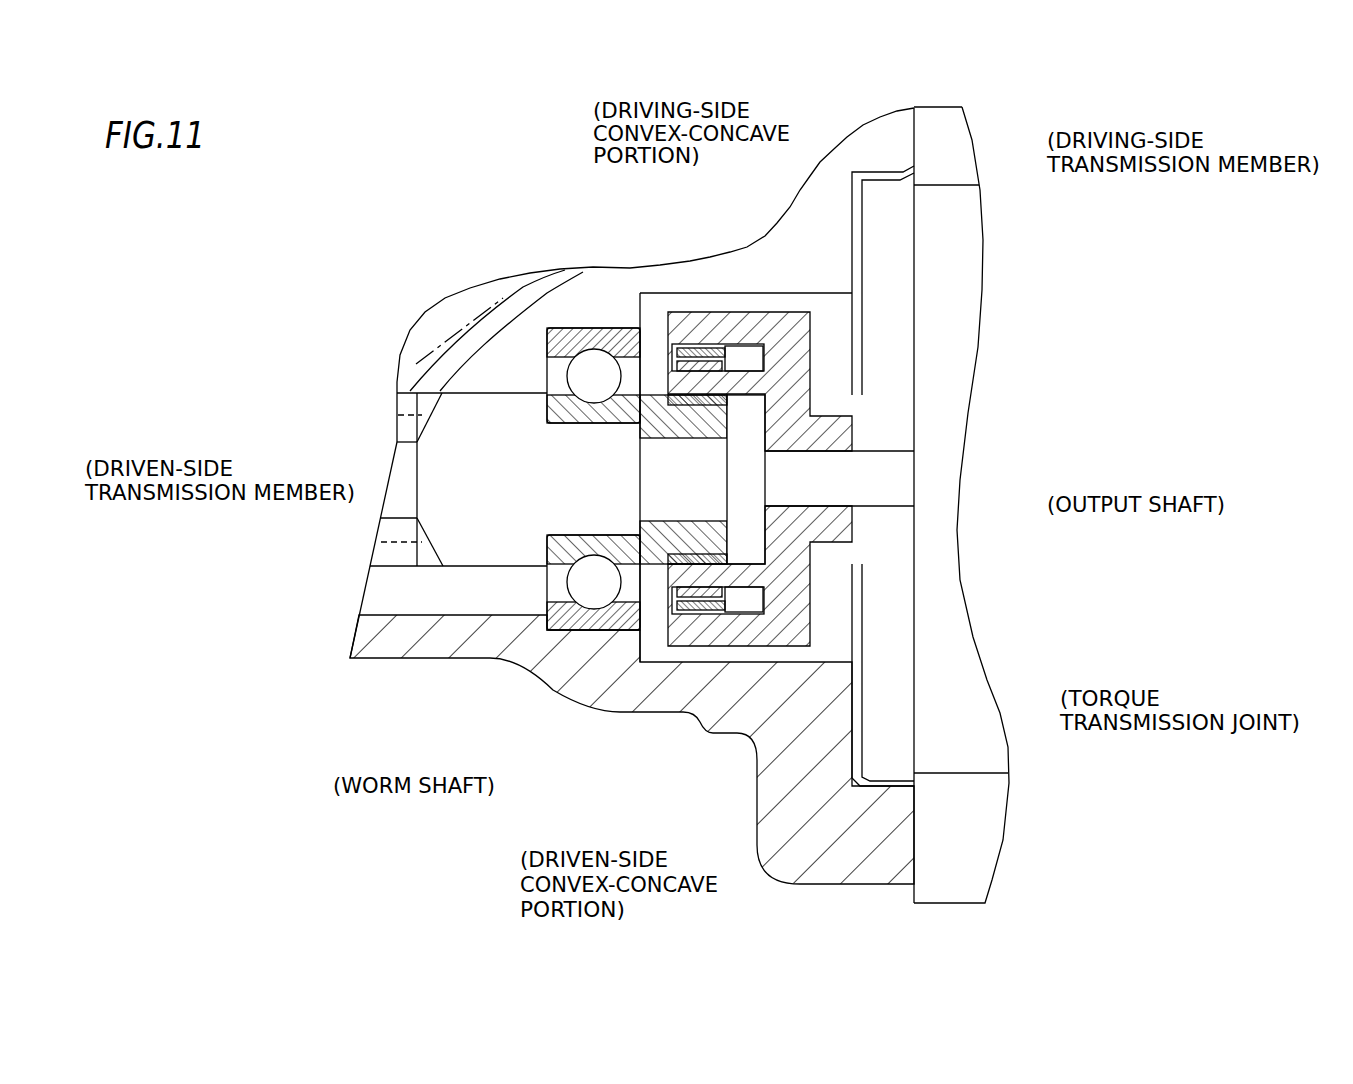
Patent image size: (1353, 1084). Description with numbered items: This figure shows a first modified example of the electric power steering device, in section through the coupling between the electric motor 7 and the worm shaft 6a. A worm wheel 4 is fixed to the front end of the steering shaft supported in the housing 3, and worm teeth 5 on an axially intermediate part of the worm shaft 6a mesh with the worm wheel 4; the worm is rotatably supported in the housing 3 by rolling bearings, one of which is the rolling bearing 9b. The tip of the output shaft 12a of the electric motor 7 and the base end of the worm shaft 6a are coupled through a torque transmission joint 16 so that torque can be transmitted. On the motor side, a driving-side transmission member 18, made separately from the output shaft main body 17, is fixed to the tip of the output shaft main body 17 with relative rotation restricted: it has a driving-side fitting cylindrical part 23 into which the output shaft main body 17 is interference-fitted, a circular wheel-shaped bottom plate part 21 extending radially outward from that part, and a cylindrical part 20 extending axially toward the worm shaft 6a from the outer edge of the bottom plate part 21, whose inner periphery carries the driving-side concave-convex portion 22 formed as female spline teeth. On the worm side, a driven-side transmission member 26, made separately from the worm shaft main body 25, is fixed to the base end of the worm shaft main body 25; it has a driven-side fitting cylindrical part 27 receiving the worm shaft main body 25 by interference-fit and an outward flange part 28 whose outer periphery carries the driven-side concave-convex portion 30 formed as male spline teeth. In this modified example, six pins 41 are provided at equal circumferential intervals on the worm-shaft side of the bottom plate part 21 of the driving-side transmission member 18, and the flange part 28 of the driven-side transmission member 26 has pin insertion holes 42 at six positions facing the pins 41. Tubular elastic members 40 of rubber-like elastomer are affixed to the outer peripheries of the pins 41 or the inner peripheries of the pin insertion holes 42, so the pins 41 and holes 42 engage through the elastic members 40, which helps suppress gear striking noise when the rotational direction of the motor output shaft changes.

The housing 3 is at (373, 655).
The worm wheel 4 is at (407, 366).
The worm teeth 5 is at (372, 557).
The worm shaft 6a is at (457, 540).
The electric motor 7 is at (960, 235).
The rolling bearing 9b is at (588, 595).
The output shaft 12a is at (886, 488).
The torque transmission joint 16 is at (824, 637).
The output shaft main body 17 is at (882, 467).
The driving-side transmission member 18 is at (790, 338).
The cylindrical part 20 is at (713, 320).
The bottom plate part 21 is at (795, 352).
The driving-side concave-convex portion 22 is at (670, 330).
The driving-side fitting cylindrical part 23 is at (823, 436).
The worm shaft main body 25 is at (437, 490).
The driven-side transmission member 26 is at (650, 420).
The driven-side fitting cylindrical part 27 is at (662, 411).
The flange part 28 is at (722, 600).
The driven-side concave-convex portion 30 is at (708, 612).
The elastic member 40 is at (678, 408).
The pin 41 is at (744, 372).
The pin insertion hole 42 is at (678, 407).